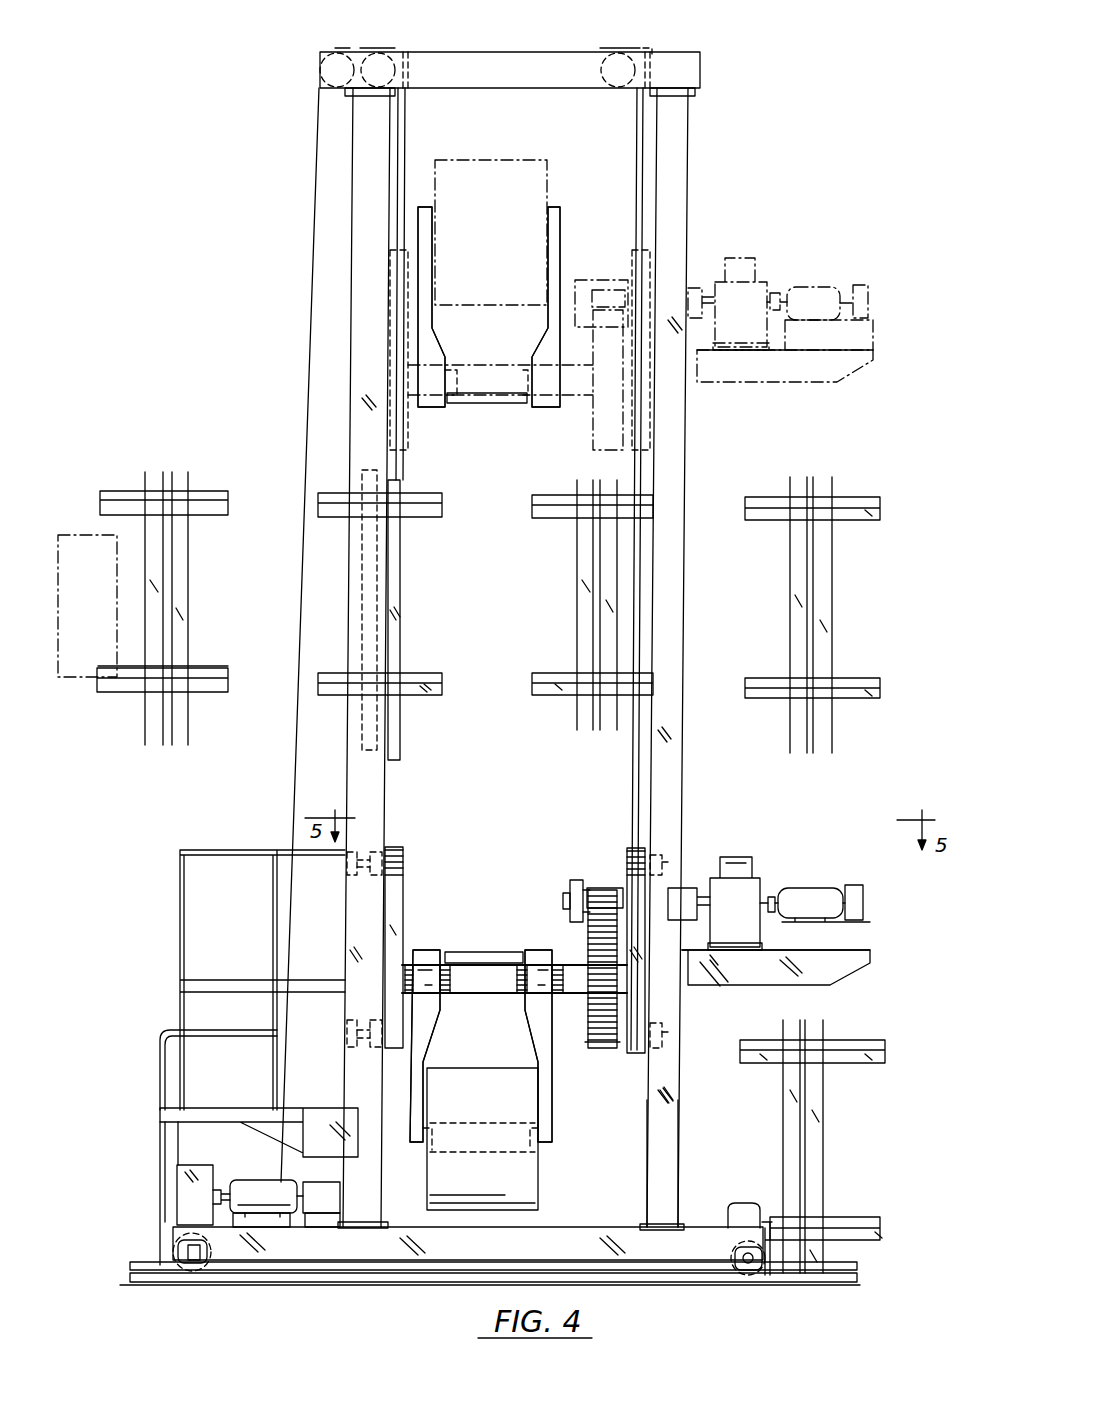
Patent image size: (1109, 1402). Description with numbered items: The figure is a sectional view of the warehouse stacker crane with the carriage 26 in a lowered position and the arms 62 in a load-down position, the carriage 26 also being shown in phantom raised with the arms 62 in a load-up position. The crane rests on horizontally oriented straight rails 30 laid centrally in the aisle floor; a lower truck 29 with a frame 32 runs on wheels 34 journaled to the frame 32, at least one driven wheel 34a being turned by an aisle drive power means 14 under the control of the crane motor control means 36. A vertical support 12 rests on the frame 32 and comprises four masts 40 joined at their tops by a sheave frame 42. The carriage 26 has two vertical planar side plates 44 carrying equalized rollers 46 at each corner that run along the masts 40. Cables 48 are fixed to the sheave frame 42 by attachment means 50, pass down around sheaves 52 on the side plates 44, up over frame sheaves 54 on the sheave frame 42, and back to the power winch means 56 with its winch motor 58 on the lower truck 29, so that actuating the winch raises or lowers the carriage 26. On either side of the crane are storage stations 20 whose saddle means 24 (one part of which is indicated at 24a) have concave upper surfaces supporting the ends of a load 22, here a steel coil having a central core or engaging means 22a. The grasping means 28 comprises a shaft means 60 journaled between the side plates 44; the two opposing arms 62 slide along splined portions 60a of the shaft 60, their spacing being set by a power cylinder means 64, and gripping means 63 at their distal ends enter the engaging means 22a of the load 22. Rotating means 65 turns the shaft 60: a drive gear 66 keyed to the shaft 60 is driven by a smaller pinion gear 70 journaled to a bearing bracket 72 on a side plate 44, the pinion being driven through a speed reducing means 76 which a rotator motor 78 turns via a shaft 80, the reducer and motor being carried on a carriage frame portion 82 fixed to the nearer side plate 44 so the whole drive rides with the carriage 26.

The vertical support 12 is at (690, 160).
The aisle drive power means 14 is at (745, 1205).
The storage station 20 is at (118, 525).
The load 22 is at (533, 162).
The engaging means 22a is at (545, 1162).
The saddle means 24 is at (128, 668).
The shelf rail 24a is at (222, 672).
The carriage 26 is at (614, 1068).
The grasping means 28 is at (568, 240).
The lower truck 29 is at (683, 1212).
The rails 30 is at (140, 1262).
The frame 32 is at (410, 1262).
The wheels 34 is at (192, 1272).
The driven wheel 34a is at (752, 1275).
The crane motor control means 36 is at (176, 1006).
The masts 40 is at (692, 117).
The sheave frame 42 is at (504, 76).
The side plates 44 is at (418, 455).
The equalized rollers 46 is at (347, 876).
The cables 48 is at (402, 138).
The attachment means 50 is at (405, 55).
The sheaves 52 is at (405, 850).
The frame sheaves 54 is at (365, 48).
The power winch means 56 is at (300, 1180).
The winch motor 58 is at (235, 1182).
The shaft means 60 is at (505, 340).
The splined portion 60a is at (410, 962).
The arms 62 is at (425, 207).
The gripping means 63 is at (408, 1150).
The power cylinder means 64 is at (470, 403).
The rotating means 65 is at (775, 278).
The drive gear 66 is at (592, 427).
The pinion gear 70 is at (597, 290).
The bearing bracket 72 is at (572, 880).
The speed reducing means 76 is at (755, 270).
The rotator motor 78 is at (835, 285).
The shaft 80 is at (772, 895).
The carriage frame portion 82 is at (862, 368).